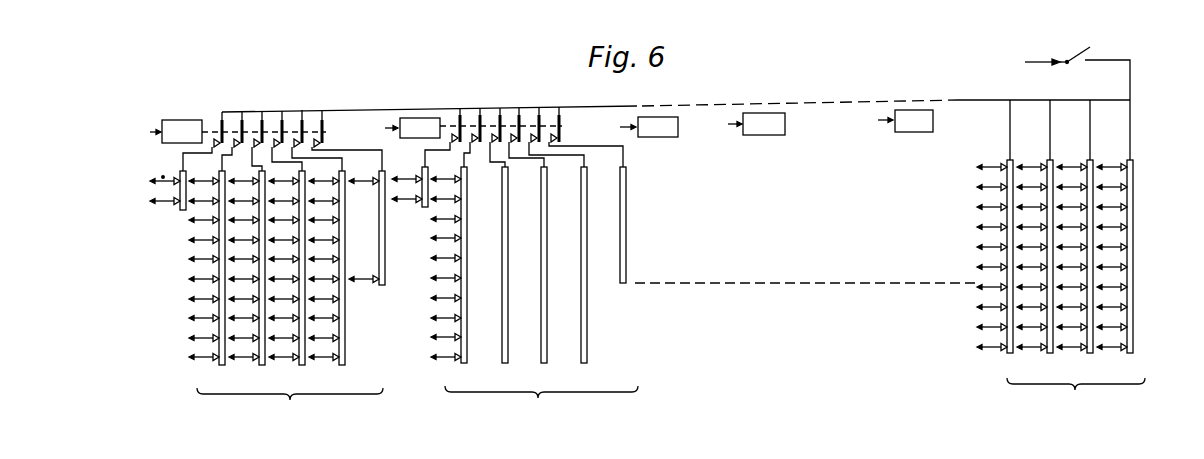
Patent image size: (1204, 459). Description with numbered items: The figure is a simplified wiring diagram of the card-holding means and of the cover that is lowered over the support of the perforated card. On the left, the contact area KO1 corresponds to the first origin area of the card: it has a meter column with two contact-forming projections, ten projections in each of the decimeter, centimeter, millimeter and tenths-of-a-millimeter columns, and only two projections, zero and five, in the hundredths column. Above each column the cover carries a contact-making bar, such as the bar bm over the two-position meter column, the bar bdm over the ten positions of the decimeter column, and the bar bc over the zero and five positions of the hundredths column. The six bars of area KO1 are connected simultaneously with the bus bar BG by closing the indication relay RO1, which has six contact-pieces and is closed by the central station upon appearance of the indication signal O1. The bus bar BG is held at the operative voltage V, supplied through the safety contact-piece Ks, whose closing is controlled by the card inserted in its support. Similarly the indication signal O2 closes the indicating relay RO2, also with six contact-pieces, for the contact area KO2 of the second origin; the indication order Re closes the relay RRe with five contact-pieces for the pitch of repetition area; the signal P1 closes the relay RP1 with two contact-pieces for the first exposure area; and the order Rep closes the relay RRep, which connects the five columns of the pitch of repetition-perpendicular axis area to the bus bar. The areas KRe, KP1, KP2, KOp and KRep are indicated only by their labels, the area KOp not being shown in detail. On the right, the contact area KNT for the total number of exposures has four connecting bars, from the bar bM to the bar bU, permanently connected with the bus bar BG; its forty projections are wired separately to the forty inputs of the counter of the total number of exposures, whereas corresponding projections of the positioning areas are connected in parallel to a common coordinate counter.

The bus bar BG is at (412, 108).
The indication signal "01" O1 is at (146, 133).
The indication relay RO1 is at (182, 131).
The contact area "origin 1" KO1 is at (268, 271).
The contact-making bar bm is at (183, 210).
The contact-making bar bdm is at (222, 362).
The contact-making bar bc is at (383, 286).
The indication signal "02" O2 is at (380, 129).
The indicating relay RO2 is at (420, 128).
The contact area "origin 2" KO2 is at (517, 268).
The indication order Re is at (618, 129).
The indication relay RRe is at (658, 127).
The indication signal P1 is at (725, 126).
The relay RP1 is at (764, 124).
The indication order Rep is at (870, 121).
The indication relay RRep is at (914, 121).
The operative voltage V is at (1028, 62).
The safety contact-piece Ks is at (1095, 73).
The contact area KNT is at (1066, 259).
The connecting bar bM is at (1010, 355).
The connecting bar bU is at (1136, 355).
The contact area KRe is at (703, 415).
The contact area KP1 is at (761, 415).
The contact area KP2 is at (816, 415).
The contact area KOp is at (871, 415).
The contact area KRep is at (930, 415).